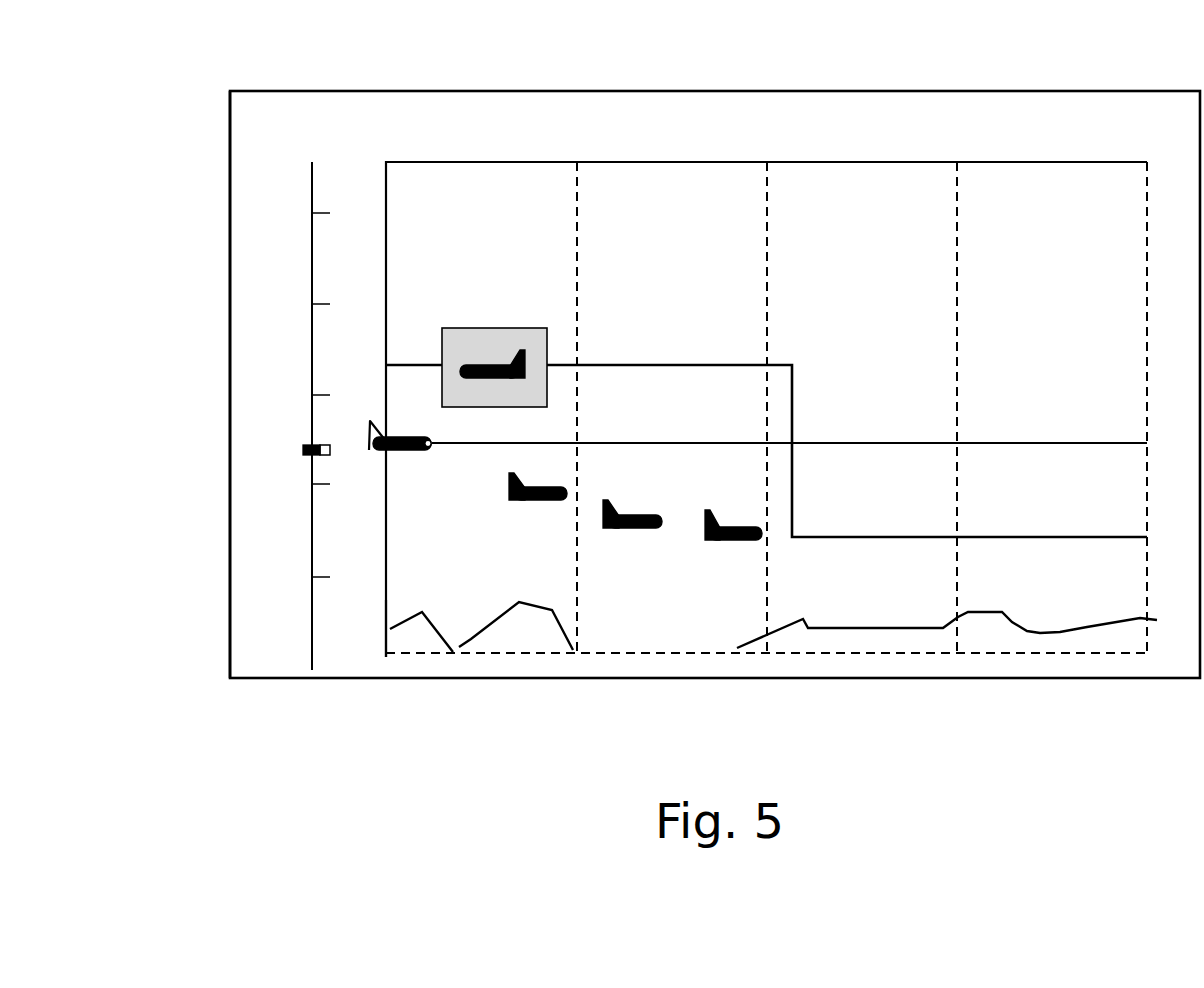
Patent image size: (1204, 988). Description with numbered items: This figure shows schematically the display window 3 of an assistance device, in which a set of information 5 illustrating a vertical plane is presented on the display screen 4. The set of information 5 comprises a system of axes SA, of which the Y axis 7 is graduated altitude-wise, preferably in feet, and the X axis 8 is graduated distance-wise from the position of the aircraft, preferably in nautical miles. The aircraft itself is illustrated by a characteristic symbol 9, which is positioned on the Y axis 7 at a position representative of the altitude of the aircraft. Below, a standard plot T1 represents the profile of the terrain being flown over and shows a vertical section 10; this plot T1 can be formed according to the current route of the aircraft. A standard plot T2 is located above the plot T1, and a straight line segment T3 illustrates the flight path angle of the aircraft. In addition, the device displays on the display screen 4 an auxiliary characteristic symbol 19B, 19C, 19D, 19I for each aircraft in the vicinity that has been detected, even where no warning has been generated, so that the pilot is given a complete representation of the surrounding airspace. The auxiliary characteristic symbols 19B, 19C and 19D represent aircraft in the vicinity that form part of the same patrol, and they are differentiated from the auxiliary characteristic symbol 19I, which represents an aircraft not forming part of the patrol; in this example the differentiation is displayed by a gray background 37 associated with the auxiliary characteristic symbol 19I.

The display frame 3 is at (905, 90).
The display screen 4 is at (205, 331).
The set of information 5 is at (705, 188).
The Y axis 7 is at (266, 200).
The X axis 8 is at (492, 142).
The characteristic symbol 9 is at (400, 450).
The vertical section 10 is at (477, 655).
The auxiliary characteristic symbol 19I is at (490, 365).
The auxiliary characteristic symbol 19B is at (538, 502).
The auxiliary characteristic symbol 19C is at (630, 530).
The auxiliary characteristic symbol 19D is at (735, 542).
The gray background 37 is at (531, 328).
The system of axes SA is at (346, 653).
The standard plot T1 is at (850, 628).
The standard plot T2 is at (675, 365).
The straight line segment T3 is at (857, 443).